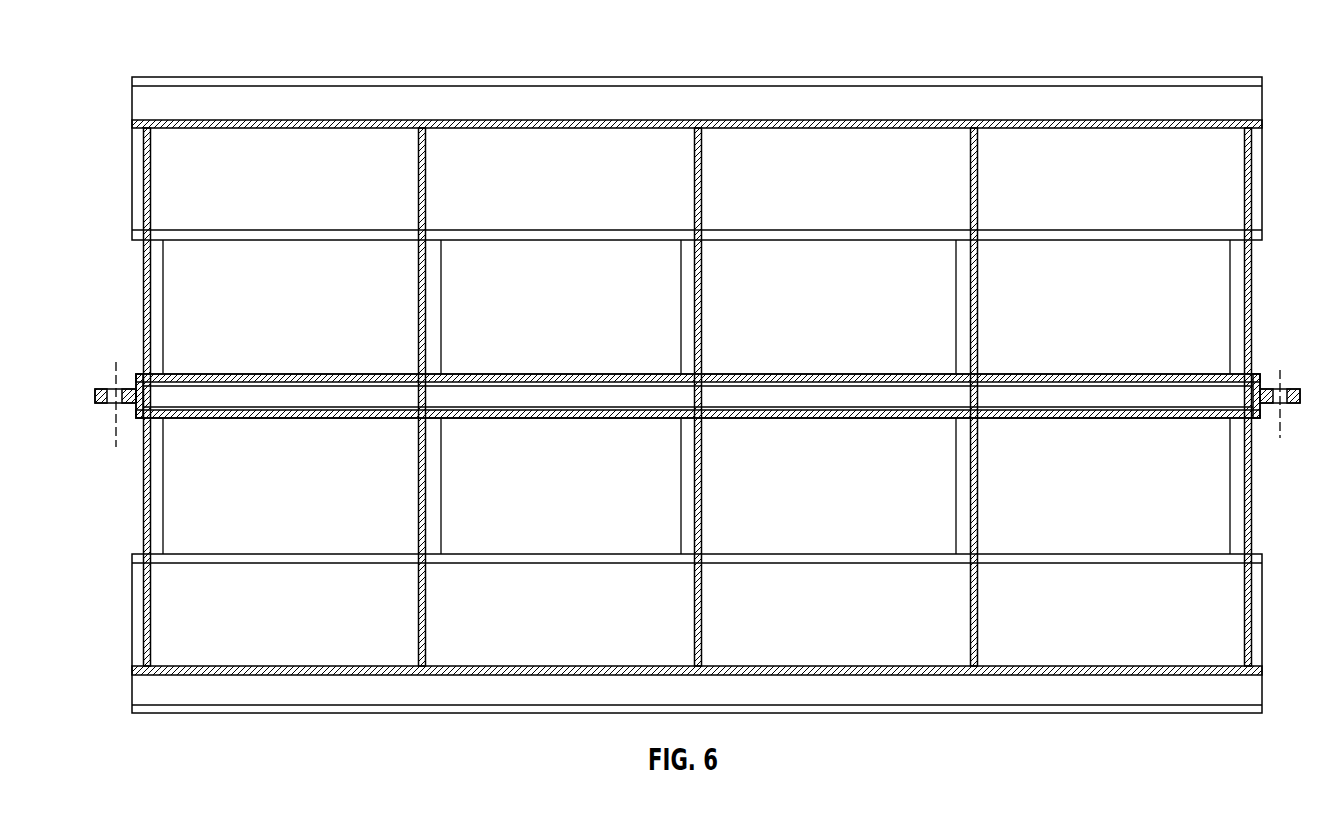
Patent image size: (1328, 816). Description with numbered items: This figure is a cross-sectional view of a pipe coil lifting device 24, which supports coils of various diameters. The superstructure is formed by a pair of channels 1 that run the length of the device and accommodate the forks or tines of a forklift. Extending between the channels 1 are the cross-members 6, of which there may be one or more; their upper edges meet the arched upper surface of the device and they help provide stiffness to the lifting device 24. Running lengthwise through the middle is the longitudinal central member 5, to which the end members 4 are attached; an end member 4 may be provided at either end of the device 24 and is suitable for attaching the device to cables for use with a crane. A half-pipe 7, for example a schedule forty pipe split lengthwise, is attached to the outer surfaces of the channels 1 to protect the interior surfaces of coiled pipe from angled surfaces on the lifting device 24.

The channel 1 is at (1265, 172).
The end member 4 is at (95, 398).
The longitudinal central member 5 is at (587, 390).
The cross-member 6 is at (681, 308).
The half-pipe 7 is at (975, 97).
The lifting device 24 is at (1170, 40).